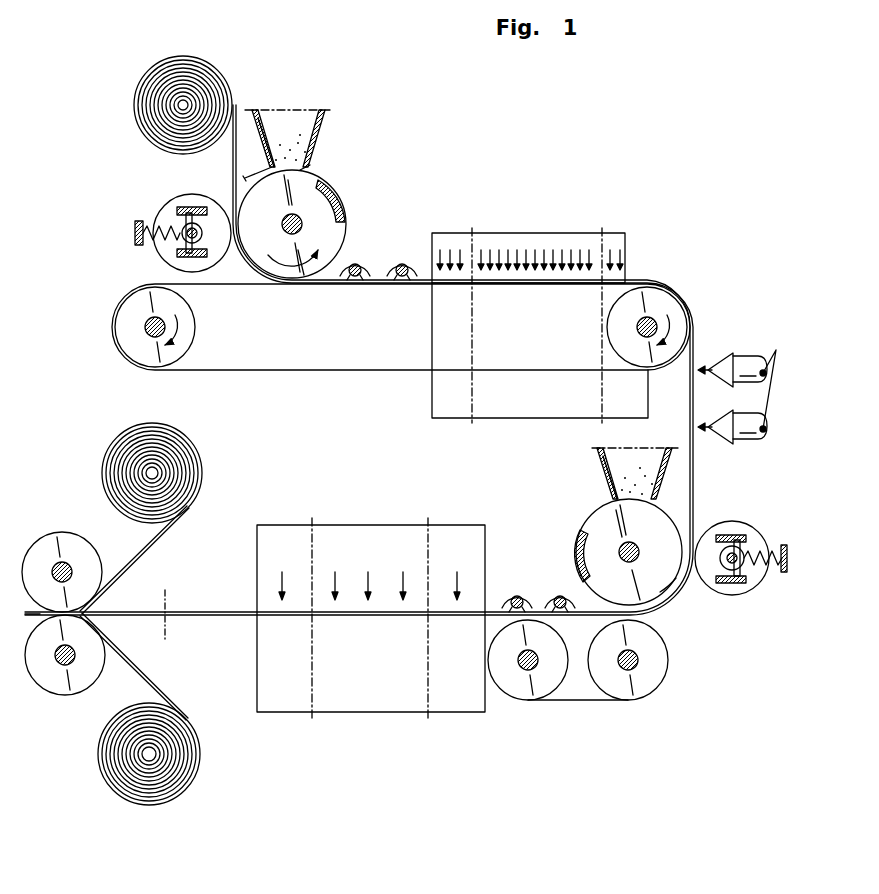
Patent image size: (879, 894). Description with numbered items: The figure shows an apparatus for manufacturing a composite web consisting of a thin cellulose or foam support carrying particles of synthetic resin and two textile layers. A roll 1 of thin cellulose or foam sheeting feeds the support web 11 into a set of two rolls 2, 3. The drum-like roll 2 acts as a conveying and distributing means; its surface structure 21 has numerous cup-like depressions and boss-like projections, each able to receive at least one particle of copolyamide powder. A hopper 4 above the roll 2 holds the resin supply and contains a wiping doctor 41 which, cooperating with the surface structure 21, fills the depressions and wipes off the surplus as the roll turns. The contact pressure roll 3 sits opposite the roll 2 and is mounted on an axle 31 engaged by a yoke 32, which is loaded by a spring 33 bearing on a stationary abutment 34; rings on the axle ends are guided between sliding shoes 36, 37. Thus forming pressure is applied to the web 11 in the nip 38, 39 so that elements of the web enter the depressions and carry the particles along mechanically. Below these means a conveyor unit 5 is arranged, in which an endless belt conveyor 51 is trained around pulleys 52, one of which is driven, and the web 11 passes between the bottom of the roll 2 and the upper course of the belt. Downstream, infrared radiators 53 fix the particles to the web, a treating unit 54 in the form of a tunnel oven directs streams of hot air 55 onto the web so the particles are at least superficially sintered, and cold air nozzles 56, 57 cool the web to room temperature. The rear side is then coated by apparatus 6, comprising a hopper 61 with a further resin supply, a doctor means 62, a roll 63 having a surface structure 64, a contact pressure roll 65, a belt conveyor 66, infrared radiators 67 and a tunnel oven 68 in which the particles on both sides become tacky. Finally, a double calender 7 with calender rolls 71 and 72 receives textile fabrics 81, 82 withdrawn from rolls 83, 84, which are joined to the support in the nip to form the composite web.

The roll 1 is at (230, 76).
The roll 2 is at (346, 198).
The contact pressure roll 3 is at (218, 262).
The hopper 4 is at (263, 106).
The conveyor belt 5 is at (405, 370).
The apparatus 6 is at (587, 512).
The double calender 7 is at (53, 531).
The support web 11 is at (332, 272).
The surface structure 21 is at (345, 227).
The axle 31 is at (190, 222).
The yoke 32 is at (182, 225).
The spring 33 is at (150, 222).
The stationary abutment 34 is at (135, 240).
The sliding shoe 36 is at (185, 206).
The sliding shoe 37 is at (188, 254).
The nip 38 is at (228, 193).
The nip 39 is at (310, 164).
The wiping doctor 41 is at (268, 165).
The endless belt conveyor 51 is at (118, 330).
The pulleys 52 is at (667, 300).
The infrared radiators 53 is at (372, 268).
The treating unit 54 is at (572, 240).
The streams of hot air 55 is at (503, 262).
The cold air nozzle 56 is at (745, 355).
The cold air nozzle 57 is at (776, 350).
The hopper 61 is at (598, 463).
The doctor means 62 is at (612, 488).
The roll 63 is at (668, 598).
The surface structure 64 is at (580, 530).
The contact pressure roll 65 is at (740, 583).
The belt conveyor 66 is at (573, 700).
The infrared radiators 67 is at (555, 590).
The tunnel oven 68 is at (333, 525).
The calender roll 71 is at (67, 532).
The calender roll 72 is at (52, 696).
The textile fabric 81 is at (170, 525).
The textile fabric 82 is at (145, 673).
The roll 83 is at (182, 458).
The roll 84 is at (105, 780).